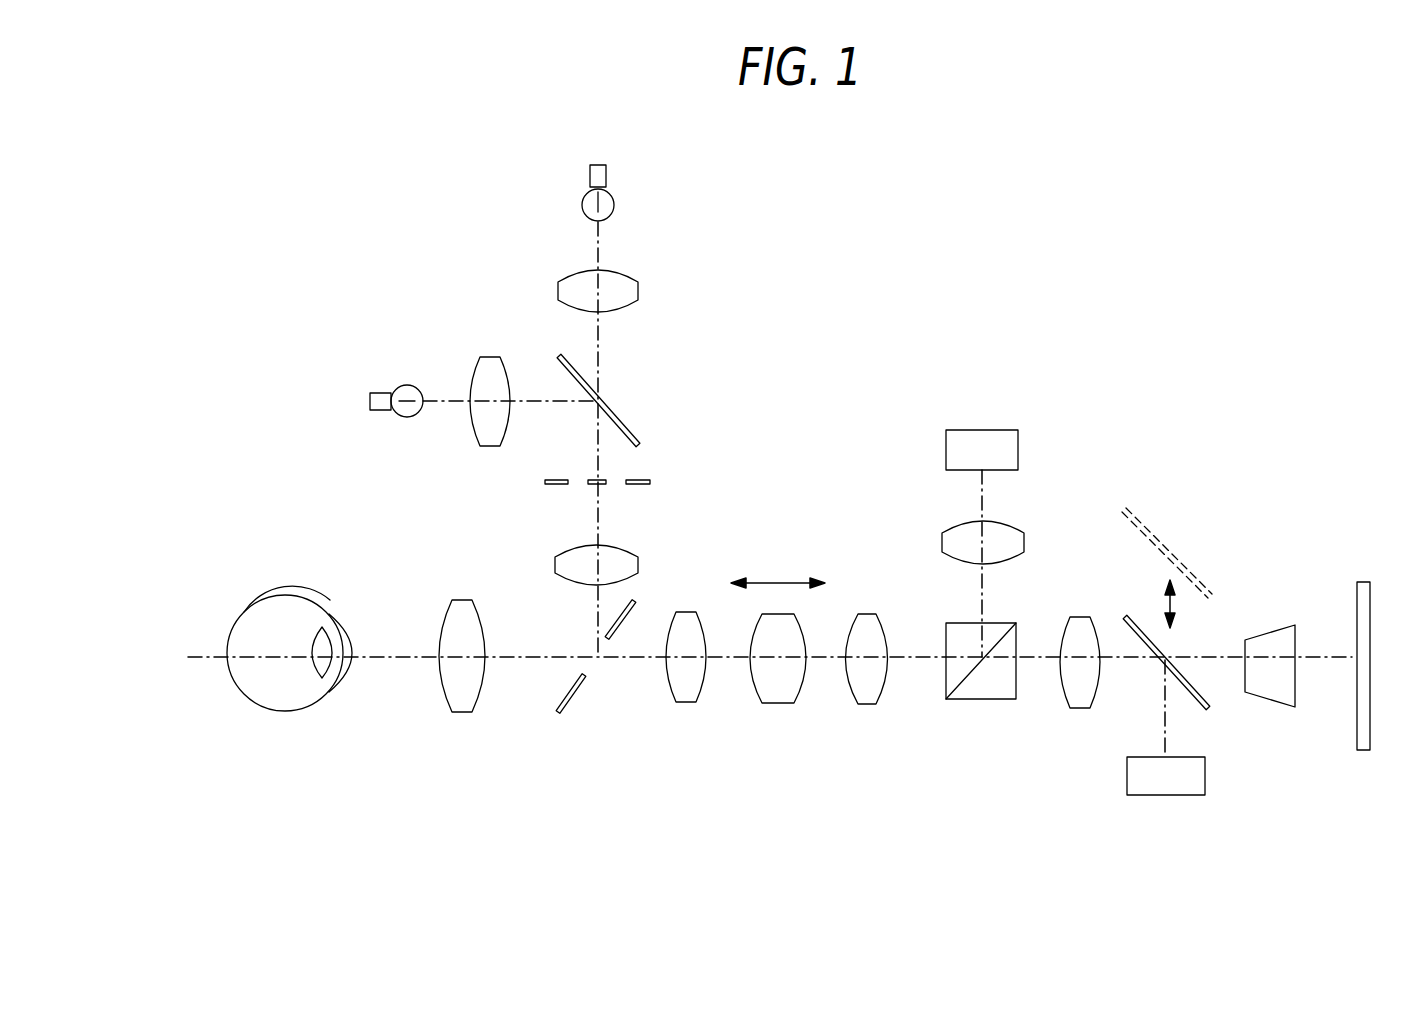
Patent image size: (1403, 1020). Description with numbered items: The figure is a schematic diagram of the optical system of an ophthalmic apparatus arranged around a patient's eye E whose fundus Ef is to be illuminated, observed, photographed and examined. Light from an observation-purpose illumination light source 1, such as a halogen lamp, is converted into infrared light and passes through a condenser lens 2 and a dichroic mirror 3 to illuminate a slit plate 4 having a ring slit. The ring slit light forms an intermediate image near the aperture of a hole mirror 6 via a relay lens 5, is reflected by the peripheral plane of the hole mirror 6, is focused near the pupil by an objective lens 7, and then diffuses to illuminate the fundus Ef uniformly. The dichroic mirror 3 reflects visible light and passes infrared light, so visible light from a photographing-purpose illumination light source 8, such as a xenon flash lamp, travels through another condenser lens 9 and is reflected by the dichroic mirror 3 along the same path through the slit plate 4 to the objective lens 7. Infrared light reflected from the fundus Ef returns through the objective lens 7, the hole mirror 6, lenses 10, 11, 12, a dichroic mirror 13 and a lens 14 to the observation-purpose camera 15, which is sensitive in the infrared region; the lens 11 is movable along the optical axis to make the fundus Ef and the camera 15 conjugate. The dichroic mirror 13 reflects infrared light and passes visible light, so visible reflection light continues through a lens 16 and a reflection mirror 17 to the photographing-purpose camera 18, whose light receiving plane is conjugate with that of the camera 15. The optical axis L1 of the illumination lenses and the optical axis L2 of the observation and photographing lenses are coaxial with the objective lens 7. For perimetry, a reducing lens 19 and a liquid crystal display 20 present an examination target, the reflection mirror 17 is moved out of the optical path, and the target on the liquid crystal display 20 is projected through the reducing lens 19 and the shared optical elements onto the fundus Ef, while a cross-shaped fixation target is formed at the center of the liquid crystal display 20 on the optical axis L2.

The observation-purpose illumination light source 1 is at (606, 177).
The condenser lens 2 is at (638, 291).
The dichroic mirror 3 is at (634, 432).
The slit plate 4 is at (650, 484).
The relay lens 5 is at (638, 568).
The hole mirror 6 is at (565, 710).
The objective lens 7 is at (457, 600).
The photographing-purpose illumination light source 8 is at (389, 394).
The condenser lens 9 is at (488, 357).
The lens 10 is at (686, 705).
The lens 11 is at (780, 705).
The lens 12 is at (868, 705).
The dichroic mirror 13 is at (982, 700).
The lens 14 is at (942, 542).
The observation-purpose camera 15 is at (946, 450).
The lens 16 is at (1080, 617).
The reflection mirror 17 is at (1133, 620).
The photographing-purpose camera 18 is at (1163, 797).
The reducing lens 19 is at (1265, 625).
The liquid crystal display 20 is at (1354, 600).
The eye to be examined E is at (285, 712).
The fundus Ef is at (246, 610).
The optical axis of the illumination optical system L1 is at (598, 345).
The optical axis of the observation and photographing optical systems L2 is at (626, 660).